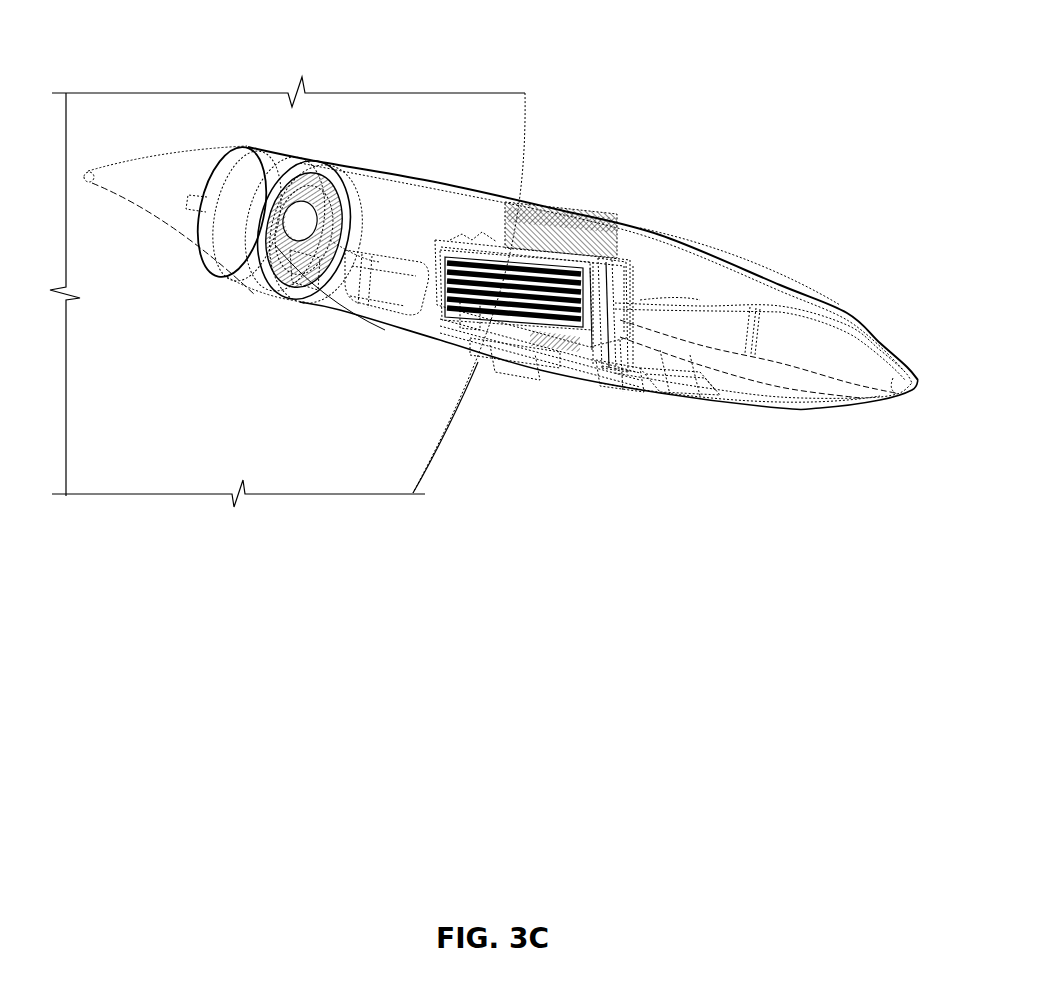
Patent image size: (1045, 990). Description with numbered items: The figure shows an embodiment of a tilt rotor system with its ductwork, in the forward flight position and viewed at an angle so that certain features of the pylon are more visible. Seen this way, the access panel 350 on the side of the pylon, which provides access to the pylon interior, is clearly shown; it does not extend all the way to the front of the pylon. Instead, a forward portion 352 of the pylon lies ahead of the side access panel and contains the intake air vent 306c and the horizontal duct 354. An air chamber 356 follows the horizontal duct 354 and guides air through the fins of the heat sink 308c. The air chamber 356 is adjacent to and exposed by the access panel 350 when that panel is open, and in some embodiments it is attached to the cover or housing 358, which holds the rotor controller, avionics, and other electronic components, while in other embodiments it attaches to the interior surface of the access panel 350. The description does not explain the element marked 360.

The access panel 350 is at (434, 178).
The front cowl ring 360 is at (357, 178).
The heat sink 308c is at (541, 273).
The cover or housing 358 is at (610, 312).
The forward portion 352 is at (778, 277).
The air chamber 356 is at (524, 358).
The horizontal duct 354 is at (613, 385).
The intake air vent 306c is at (674, 400).